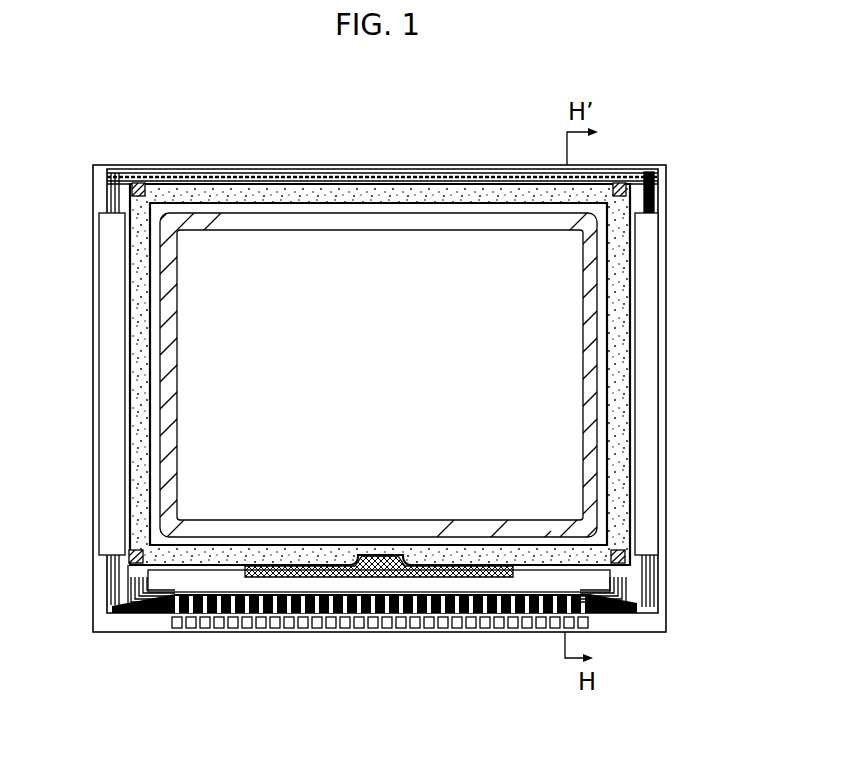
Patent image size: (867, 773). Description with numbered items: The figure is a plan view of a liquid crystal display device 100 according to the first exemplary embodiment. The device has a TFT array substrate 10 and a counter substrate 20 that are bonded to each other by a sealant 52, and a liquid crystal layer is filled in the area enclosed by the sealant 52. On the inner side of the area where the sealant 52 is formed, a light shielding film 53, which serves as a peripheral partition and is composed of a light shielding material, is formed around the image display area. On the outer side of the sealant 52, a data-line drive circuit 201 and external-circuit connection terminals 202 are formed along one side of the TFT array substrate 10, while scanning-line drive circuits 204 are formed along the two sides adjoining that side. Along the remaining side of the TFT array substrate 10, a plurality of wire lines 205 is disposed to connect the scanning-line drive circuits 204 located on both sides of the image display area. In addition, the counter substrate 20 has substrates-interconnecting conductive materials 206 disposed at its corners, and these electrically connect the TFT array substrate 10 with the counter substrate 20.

The liquid crystal display device 100 is at (492, 107).
The TFT array substrate 10 is at (289, 158).
The counter substrate 20 is at (354, 172).
The wire lines 205 is at (220, 173).
The substrates-interconnecting conductive materials 206 is at (138, 183).
The scanning-line drive circuits 204 is at (110, 415).
The sealant 52 is at (620, 337).
The light shielding film 53 is at (588, 490).
The data-line drive circuit 201 is at (498, 585).
The external-circuit connection terminals 202 is at (207, 628).